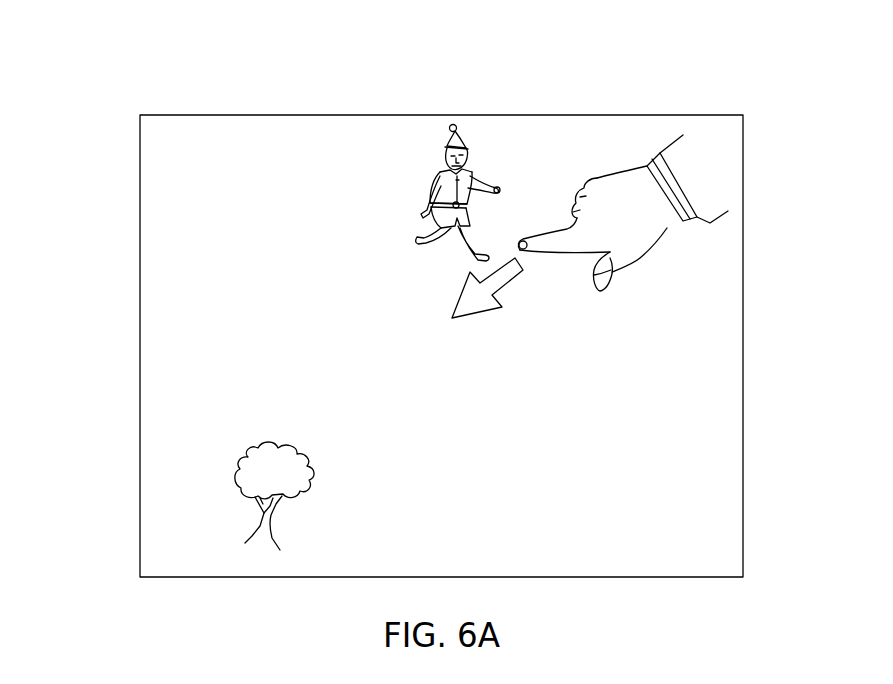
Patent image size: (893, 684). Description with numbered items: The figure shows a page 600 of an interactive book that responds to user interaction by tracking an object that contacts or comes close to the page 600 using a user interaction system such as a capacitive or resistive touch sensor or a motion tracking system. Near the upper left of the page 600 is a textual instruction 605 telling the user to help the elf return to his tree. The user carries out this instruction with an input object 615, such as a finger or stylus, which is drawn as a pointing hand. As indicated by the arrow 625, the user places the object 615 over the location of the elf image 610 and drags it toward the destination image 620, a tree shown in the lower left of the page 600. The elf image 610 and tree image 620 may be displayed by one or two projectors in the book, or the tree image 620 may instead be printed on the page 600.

The page 600 is at (640, 90).
The instruction text 605 is at (178, 177).
The elf image 610 is at (473, 160).
The input object 615 is at (635, 264).
The destination image 620 is at (238, 453).
The arrow 625 is at (510, 280).